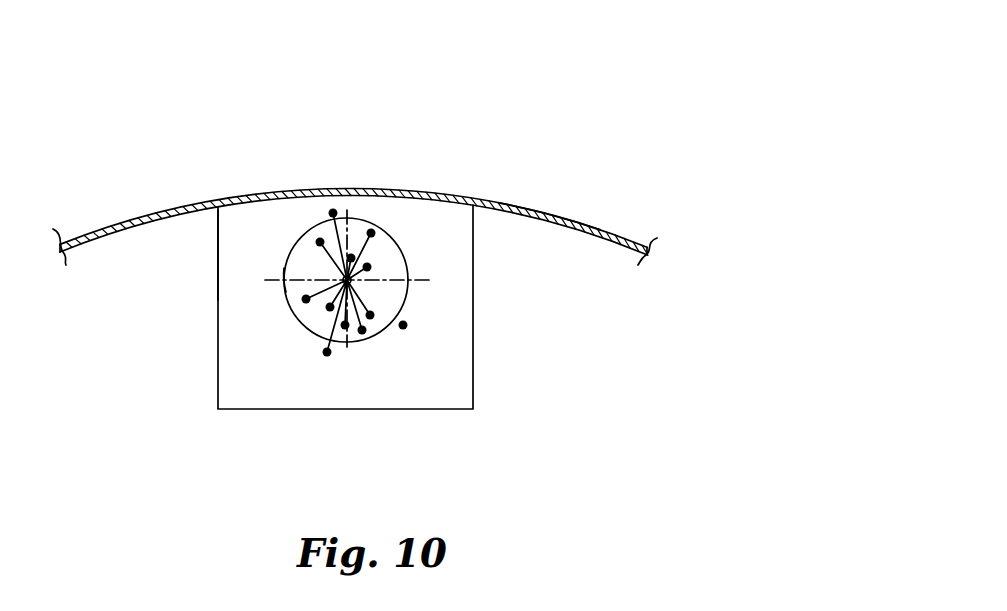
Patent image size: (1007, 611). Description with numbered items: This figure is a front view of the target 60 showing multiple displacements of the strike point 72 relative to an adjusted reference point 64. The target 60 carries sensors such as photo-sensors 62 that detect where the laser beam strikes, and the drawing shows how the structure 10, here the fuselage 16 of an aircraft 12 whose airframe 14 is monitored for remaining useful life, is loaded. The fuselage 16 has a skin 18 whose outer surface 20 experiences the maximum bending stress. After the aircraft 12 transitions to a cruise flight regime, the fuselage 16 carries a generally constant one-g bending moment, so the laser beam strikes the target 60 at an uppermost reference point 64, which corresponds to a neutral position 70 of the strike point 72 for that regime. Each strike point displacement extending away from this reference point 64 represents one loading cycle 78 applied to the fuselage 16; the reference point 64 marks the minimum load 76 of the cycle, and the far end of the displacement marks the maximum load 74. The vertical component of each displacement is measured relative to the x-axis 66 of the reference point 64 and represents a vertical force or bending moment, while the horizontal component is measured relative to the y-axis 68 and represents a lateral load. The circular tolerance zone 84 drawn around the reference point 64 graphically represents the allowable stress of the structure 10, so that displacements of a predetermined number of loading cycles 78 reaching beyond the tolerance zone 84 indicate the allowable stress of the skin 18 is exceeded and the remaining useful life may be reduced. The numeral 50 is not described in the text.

The structure 10 is at (375, 153).
The aircraft 12 is at (600, 106).
The airframe 14 is at (628, 240).
The fuselage 16 is at (88, 237).
The skin 18 is at (160, 217).
The outer surface 20 is at (558, 224).
The mounting block 50 is at (218, 233).
The target 60 is at (291, 307).
The photo-sensors 62 is at (232, 390).
The reference point 64 is at (240, 284).
The x-axis 66 is at (430, 280).
The y-axis 68 is at (347, 217).
The neutral position 70 is at (347, 280).
The strike point 72 is at (422, 298).
The maximum load 74 is at (320, 242).
The minimum load 76 is at (367, 267).
The loading cycle 78 is at (372, 233).
The tolerance zone 84 is at (290, 265).